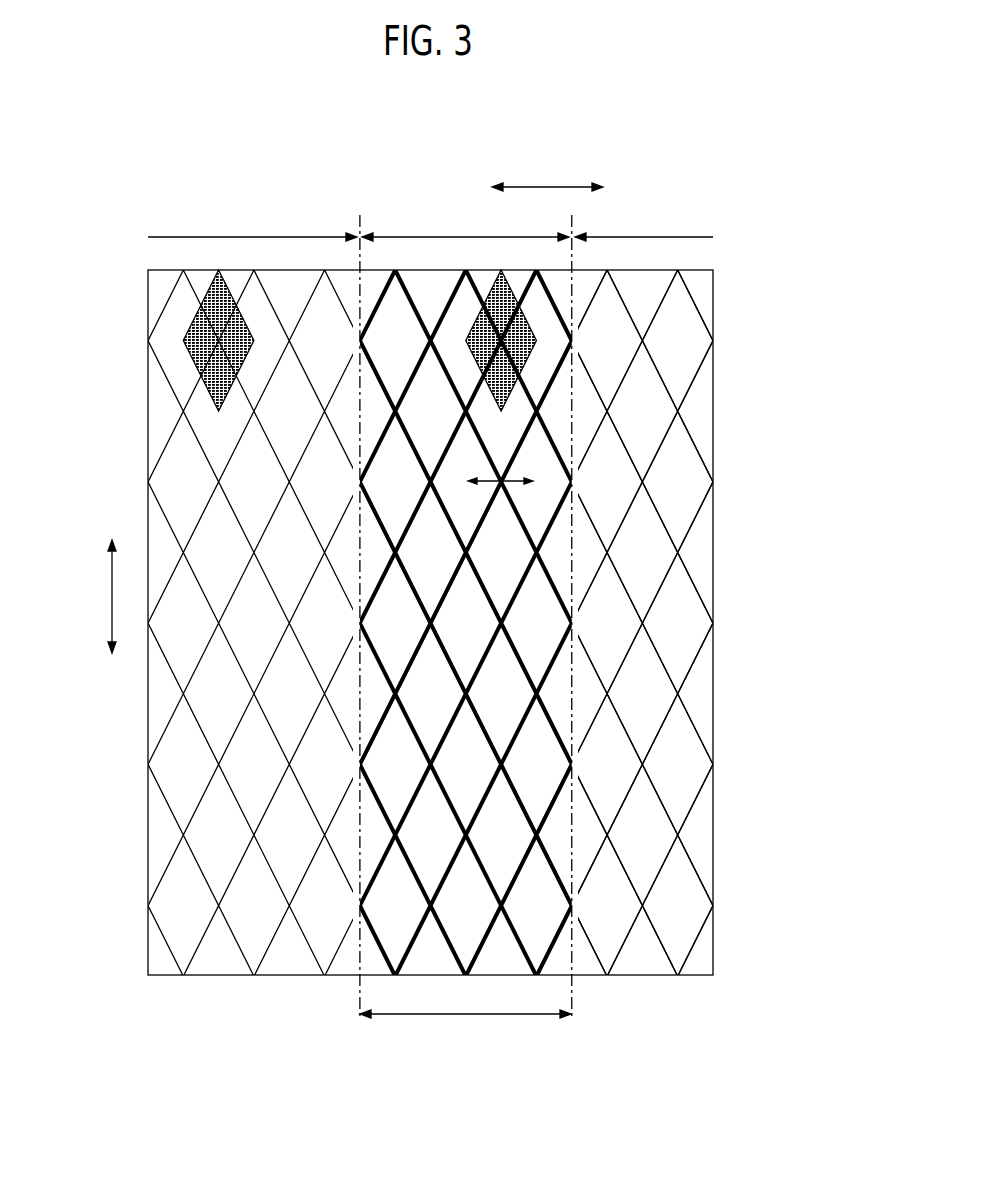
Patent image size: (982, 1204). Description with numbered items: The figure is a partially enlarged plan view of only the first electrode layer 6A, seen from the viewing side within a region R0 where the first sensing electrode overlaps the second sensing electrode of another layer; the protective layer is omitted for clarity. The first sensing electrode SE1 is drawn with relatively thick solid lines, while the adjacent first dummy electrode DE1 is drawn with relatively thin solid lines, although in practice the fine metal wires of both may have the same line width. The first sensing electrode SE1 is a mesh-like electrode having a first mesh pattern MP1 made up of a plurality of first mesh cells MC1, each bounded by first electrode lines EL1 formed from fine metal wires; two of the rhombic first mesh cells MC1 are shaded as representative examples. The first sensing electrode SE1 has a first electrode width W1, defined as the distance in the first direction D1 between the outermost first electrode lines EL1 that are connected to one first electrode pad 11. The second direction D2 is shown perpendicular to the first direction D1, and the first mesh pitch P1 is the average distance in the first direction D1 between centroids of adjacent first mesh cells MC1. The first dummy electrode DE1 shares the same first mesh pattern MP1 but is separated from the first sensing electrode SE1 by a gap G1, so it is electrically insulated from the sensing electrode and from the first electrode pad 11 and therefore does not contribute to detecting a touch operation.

The first dummy electrode DE1 is at (430, 223).
The first sensing electrode SE1 is at (465, 223).
The first direction D1 is at (547, 172).
The second direction D2 is at (94, 596).
The region R0 is at (713, 292).
The first mesh cell MC1 is at (215, 390).
The first electrode layer 6A is at (700, 428).
The first mesh pitch P1 is at (515, 487).
The first electrode line EL1 is at (553, 660).
The first mesh pattern MP1 is at (690, 808).
The gap G1 is at (357, 900).
The first electrode width W1 is at (465, 1030).
The first electrode pad 11 is at (560, 940).